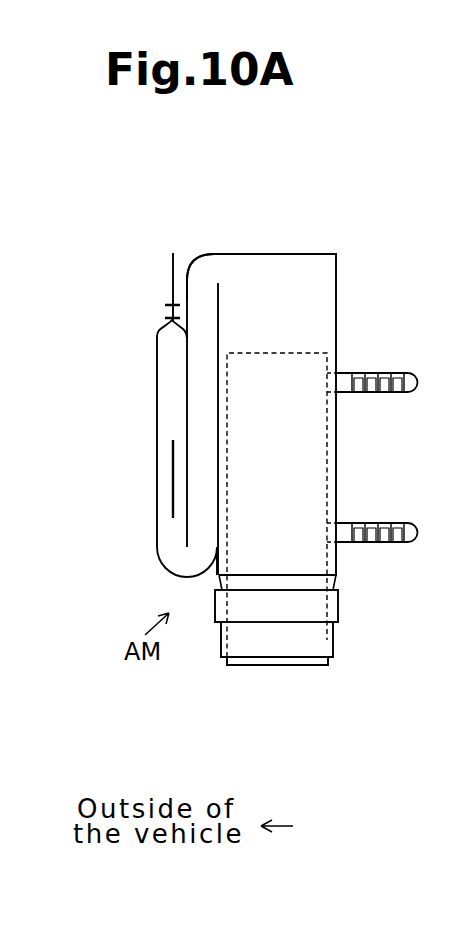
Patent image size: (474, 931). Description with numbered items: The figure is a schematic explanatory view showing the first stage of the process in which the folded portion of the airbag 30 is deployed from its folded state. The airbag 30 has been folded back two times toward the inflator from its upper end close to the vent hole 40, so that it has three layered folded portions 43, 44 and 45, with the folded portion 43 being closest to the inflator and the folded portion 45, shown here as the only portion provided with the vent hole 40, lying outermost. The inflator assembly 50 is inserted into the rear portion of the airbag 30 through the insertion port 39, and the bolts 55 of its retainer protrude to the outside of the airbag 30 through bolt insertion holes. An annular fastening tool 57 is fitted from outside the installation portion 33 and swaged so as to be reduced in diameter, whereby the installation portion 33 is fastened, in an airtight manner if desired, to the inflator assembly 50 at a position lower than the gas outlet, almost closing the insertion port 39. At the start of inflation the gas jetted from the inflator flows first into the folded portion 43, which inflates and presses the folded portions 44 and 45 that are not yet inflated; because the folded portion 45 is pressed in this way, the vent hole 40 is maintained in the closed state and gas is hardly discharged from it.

The airbag 30 is at (245, 254).
The installation portion 33 is at (333, 630).
The insertion port 39 is at (327, 640).
The vent hole 40 is at (173, 493).
The folded portion 43 is at (303, 263).
The folded portion 44 is at (195, 273).
The folded portion 45 is at (157, 361).
The inflator assembly 50 is at (265, 666).
The bolts 55 is at (373, 373).
The fastening tool 57 is at (339, 604).